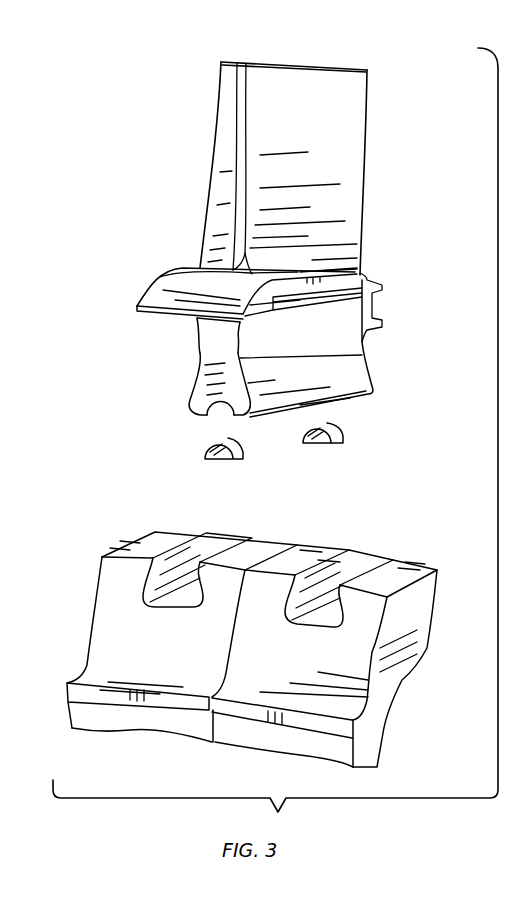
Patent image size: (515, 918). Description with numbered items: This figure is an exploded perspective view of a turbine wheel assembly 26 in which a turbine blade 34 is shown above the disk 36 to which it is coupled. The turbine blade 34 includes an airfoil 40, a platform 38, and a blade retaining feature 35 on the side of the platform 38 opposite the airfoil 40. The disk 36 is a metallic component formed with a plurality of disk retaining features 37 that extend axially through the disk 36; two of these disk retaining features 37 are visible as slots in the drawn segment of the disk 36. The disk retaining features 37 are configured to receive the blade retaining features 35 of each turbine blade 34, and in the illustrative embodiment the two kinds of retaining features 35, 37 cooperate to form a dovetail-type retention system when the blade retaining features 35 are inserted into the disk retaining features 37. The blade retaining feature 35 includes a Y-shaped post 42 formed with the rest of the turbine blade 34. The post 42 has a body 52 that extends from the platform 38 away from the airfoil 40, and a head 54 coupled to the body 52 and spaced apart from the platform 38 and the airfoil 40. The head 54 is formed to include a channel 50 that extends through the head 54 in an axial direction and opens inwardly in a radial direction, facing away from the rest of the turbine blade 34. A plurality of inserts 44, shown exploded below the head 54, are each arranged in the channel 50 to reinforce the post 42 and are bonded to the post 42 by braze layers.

The rotor assembly 26 is at (118, 150).
The turbine blade 34 is at (128, 218).
The airfoil 40 is at (230, 155).
The platform 38 is at (180, 292).
The blade retaining feature 35 is at (132, 323).
The post 42 is at (198, 360).
The body 52 is at (215, 327).
The head 54 is at (193, 405).
The channel 50 is at (220, 417).
The inserts 44 is at (205, 452).
The disk 36 is at (428, 643).
The disk retaining feature 37 is at (213, 548).